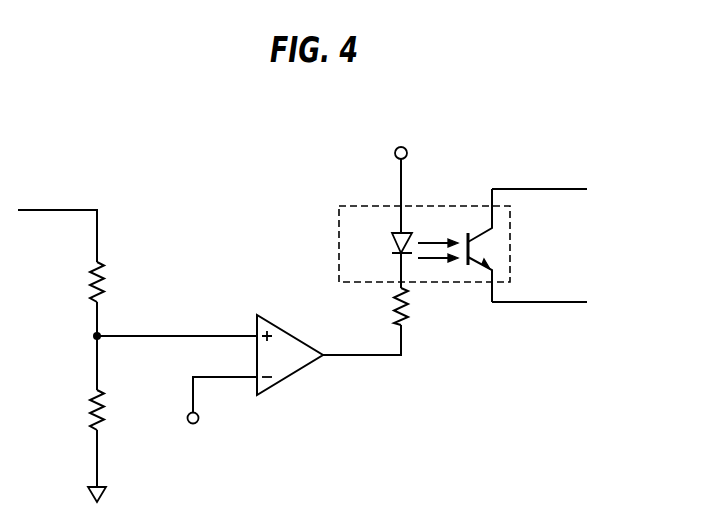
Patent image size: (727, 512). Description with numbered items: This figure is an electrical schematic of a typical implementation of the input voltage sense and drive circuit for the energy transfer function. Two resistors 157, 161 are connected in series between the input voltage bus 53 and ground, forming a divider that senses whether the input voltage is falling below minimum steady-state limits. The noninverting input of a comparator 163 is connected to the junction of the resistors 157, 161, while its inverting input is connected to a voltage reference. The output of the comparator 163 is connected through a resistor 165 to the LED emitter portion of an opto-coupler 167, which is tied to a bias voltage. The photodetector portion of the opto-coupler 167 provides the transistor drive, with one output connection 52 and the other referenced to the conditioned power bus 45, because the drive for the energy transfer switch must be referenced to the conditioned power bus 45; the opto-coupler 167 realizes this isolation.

The input voltage bus 53 is at (47, 210).
The resistor 157 is at (103, 285).
The resistor 161 is at (103, 414).
The comparator 163 is at (294, 332).
The resistor 165 is at (408, 303).
The opto-coupler 167 is at (416, 206).
The output line 52 is at (553, 189).
The conditioned power bus 45 is at (553, 302).